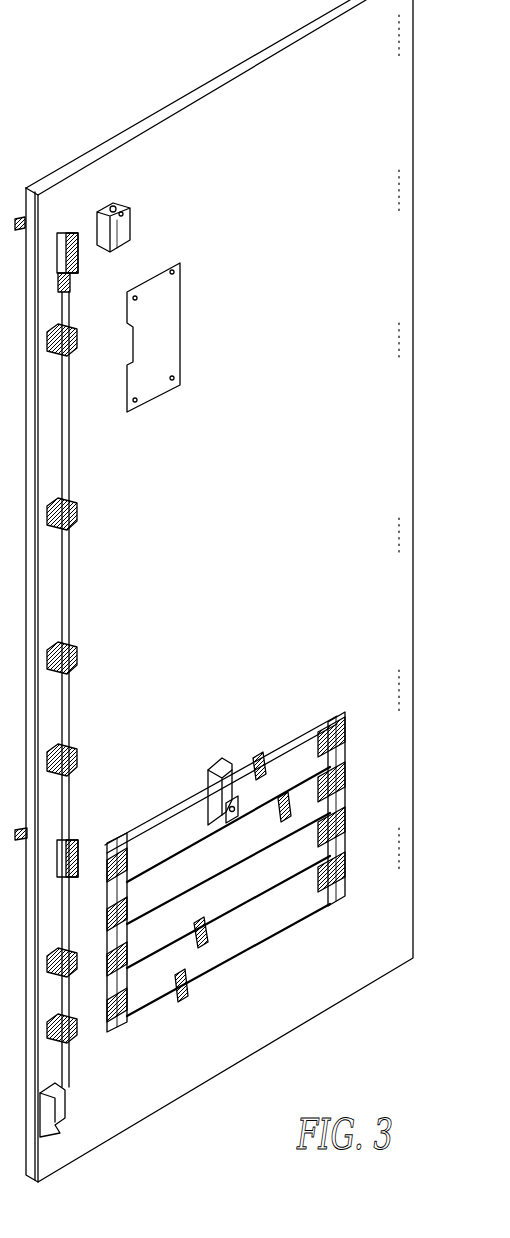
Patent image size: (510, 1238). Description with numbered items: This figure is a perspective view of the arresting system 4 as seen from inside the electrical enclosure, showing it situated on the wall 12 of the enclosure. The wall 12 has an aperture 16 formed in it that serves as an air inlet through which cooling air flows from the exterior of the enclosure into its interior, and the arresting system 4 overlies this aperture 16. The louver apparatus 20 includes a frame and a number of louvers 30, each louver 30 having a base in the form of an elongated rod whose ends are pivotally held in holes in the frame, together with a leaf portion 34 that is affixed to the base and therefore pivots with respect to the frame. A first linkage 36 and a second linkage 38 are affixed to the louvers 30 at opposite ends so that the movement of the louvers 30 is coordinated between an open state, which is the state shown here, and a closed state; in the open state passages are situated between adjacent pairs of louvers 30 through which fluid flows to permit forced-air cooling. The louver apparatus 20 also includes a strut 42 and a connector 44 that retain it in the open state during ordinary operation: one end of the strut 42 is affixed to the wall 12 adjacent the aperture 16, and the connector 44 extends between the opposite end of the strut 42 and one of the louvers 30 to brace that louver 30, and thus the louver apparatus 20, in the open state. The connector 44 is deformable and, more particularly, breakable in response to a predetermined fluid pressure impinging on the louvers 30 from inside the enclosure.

The arresting system 4 is at (233, 705).
The wall 12 is at (417, 87).
The aperture 16 is at (178, 818).
The louver apparatus 20 is at (230, 851).
The louvers 30 is at (258, 758).
The leaf portion 34 is at (147, 842).
The first linkage 36 is at (107, 962).
The second linkage 38 is at (345, 733).
The strut 42 is at (208, 776).
The connector 44 is at (217, 832).